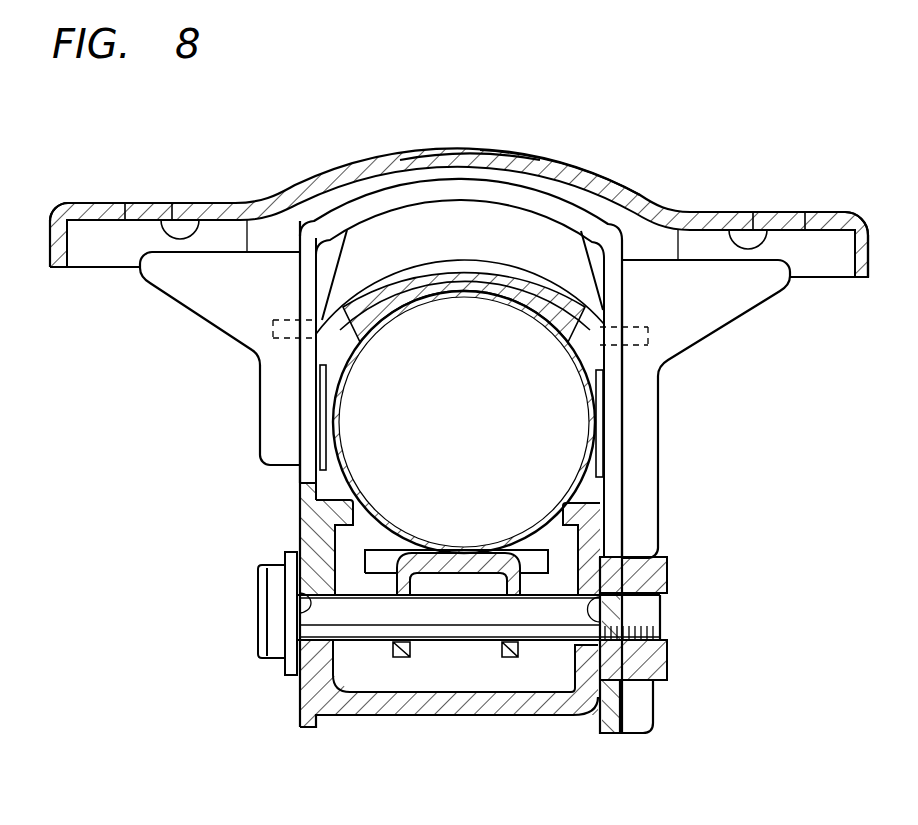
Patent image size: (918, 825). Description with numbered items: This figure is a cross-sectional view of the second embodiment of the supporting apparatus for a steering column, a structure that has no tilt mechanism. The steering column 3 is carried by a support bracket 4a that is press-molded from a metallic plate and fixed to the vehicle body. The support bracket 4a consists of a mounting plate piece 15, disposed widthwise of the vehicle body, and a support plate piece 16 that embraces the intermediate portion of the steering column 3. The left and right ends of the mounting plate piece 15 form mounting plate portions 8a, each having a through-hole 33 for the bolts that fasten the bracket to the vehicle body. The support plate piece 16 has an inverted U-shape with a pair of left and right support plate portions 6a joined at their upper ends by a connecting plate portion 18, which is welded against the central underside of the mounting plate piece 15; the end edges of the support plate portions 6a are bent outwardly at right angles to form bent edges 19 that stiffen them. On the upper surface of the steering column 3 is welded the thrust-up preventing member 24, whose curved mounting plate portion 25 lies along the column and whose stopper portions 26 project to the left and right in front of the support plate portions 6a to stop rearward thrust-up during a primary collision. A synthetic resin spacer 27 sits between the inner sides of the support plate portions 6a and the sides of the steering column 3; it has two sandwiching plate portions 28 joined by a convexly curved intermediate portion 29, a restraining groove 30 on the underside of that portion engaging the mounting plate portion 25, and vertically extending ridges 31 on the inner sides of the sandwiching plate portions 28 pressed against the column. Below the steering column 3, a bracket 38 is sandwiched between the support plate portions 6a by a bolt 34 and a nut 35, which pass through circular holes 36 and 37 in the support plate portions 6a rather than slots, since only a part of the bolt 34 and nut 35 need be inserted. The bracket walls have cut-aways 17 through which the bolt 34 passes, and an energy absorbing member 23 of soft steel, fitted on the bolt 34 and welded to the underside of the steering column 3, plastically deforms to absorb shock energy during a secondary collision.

The steering column 3 is at (343, 468).
The support bracket 4a is at (455, 125).
The support plate portions 6a is at (305, 443).
The mounting plate portions 8a is at (95, 207).
The mounting plate piece 15 is at (413, 165).
The support plate piece 16 is at (437, 411).
The cut-aways 17 is at (303, 612).
The connecting plate portion 18 is at (530, 163).
The bent edges 19 is at (272, 372).
The energy absorbing member 23 is at (450, 560).
The thrust-up preventing member 24 is at (555, 178).
The mounting plate portion 25 is at (585, 232).
The stopper portions 26 is at (273, 320).
The spacer 27 is at (390, 268).
The sandwiching plate portions 28 is at (313, 417).
The intermediate portion 29 is at (443, 263).
The restraining groove 30 is at (480, 277).
The ridges 31 is at (353, 402).
The through-holes 33 is at (142, 207).
The bolt 34 is at (450, 636).
The nut 35 is at (667, 660).
The hole 36 is at (640, 572).
The hole 37 is at (297, 630).
The bracket 38 is at (517, 707).